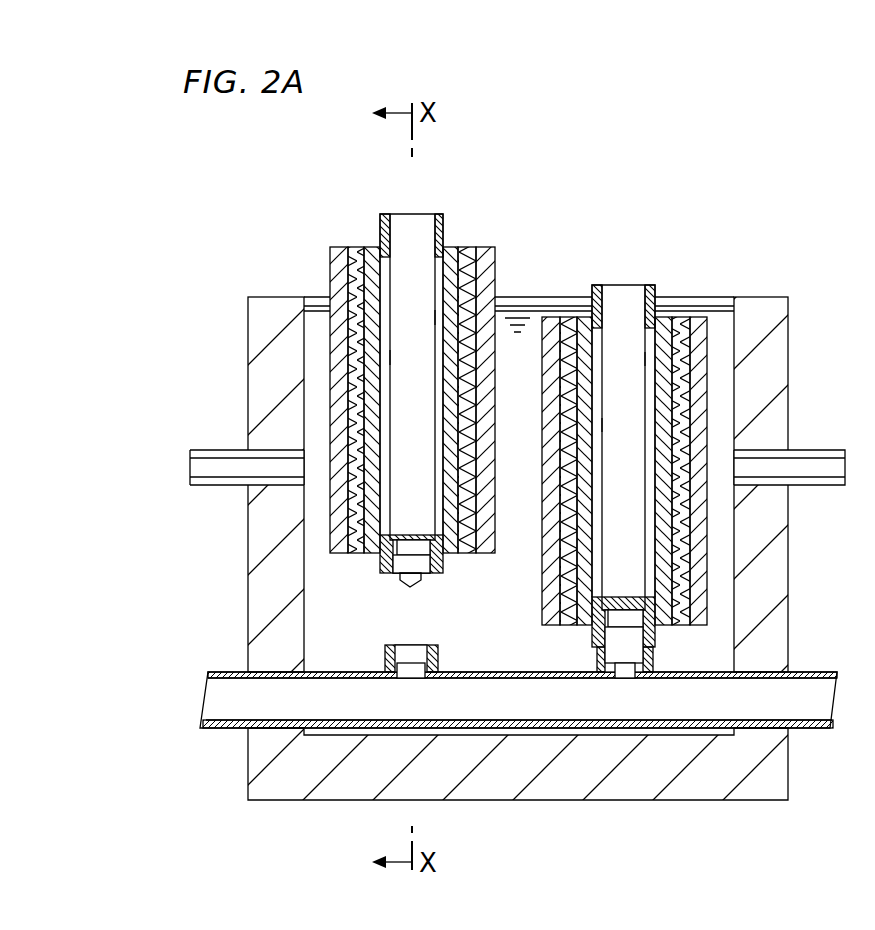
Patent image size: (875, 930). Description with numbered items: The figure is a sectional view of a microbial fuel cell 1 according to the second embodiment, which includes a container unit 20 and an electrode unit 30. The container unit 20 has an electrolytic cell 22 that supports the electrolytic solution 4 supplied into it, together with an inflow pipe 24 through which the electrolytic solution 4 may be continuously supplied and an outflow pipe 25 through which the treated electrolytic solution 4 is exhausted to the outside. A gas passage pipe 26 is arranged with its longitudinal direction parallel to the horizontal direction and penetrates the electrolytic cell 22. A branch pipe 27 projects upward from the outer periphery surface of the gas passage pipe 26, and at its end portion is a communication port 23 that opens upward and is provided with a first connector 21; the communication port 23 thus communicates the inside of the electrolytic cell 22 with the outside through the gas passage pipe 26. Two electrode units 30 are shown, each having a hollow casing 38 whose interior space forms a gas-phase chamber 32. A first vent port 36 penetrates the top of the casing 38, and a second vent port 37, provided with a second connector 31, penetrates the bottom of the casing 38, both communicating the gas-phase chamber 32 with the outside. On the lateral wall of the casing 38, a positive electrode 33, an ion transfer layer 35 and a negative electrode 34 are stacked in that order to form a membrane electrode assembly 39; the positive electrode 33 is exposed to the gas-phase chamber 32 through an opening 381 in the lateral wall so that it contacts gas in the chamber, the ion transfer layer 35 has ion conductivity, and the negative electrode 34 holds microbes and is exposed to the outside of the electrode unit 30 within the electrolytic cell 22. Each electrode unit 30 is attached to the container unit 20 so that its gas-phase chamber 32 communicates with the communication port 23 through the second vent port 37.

The microbial fuel cell 1 is at (520, 548).
The electrolytic solution 4 is at (357, 599).
The container unit 20 is at (790, 773).
The first connector 21 is at (422, 652).
The electrolytic cell 22 is at (790, 333).
The communication port 23 is at (410, 673).
The inflow pipe 24 is at (828, 453).
The outflow pipe 25 is at (210, 452).
The gas passage pipe 26 is at (698, 727).
The branch pipe 27 is at (385, 663).
The electrode unit 30 is at (532, 383).
The second connector 31 is at (410, 565).
The gas-phase chamber 32 is at (523, 376).
The positive electrode 33 is at (510, 406).
The negative electrode 34 is at (338, 265).
The ion transfer layer 35 is at (354, 268).
The first vent port 36 is at (403, 213).
The second vent port 37 is at (410, 545).
The casing 38 is at (393, 553).
The membrane electrode assembly 39 is at (514, 383).
The opening 381 is at (385, 358).